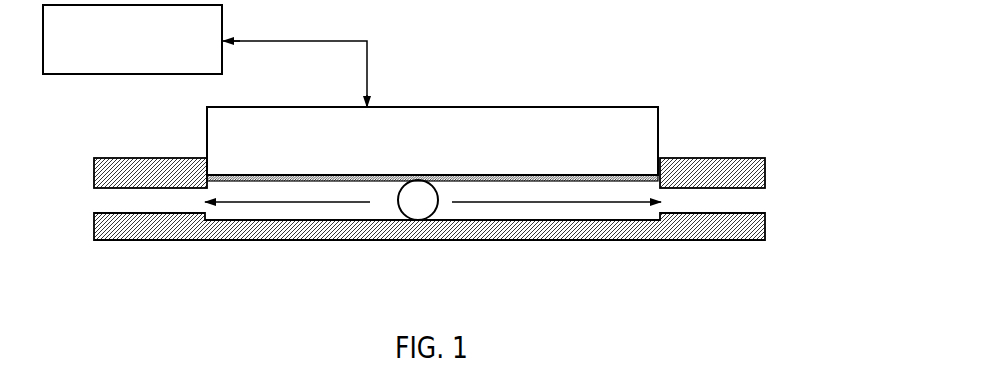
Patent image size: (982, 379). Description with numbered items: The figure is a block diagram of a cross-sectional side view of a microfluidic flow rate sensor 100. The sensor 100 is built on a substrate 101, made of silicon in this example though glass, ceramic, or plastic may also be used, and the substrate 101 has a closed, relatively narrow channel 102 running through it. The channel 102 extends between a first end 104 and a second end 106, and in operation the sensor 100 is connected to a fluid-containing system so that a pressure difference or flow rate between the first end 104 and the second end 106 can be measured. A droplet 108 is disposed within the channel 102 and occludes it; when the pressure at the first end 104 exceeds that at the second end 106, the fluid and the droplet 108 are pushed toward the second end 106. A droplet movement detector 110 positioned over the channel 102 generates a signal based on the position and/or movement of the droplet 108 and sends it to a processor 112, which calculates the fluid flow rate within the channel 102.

The microfluidic flow rate sensor 100 is at (682, 71).
The substrate 101 is at (635, 240).
The channel 102 is at (618, 174).
The first end 104 is at (93, 178).
The second end 106 is at (766, 187).
The droplet 108 is at (418, 220).
The droplet movement detector 110 is at (432, 108).
The processor 112 is at (132, 39).